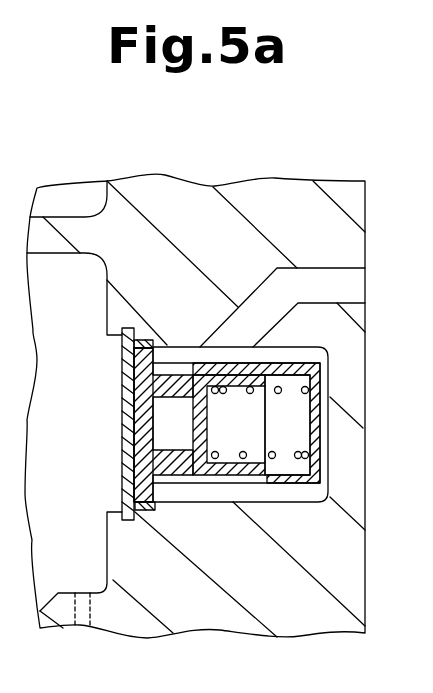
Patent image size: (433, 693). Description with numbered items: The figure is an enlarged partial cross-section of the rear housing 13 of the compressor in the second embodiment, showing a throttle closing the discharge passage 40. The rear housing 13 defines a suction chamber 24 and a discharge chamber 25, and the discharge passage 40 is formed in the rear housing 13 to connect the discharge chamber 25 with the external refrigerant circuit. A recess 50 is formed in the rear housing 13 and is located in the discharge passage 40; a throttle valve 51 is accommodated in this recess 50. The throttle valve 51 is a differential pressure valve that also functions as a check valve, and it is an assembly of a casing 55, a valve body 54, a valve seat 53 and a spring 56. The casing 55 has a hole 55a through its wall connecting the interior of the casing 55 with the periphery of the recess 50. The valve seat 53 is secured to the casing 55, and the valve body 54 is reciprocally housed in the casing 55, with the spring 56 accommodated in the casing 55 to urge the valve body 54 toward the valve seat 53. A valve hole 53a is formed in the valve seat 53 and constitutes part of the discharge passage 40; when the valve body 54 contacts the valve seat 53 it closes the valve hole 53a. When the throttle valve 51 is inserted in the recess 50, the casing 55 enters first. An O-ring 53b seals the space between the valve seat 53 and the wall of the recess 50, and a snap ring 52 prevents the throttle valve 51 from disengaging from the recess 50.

The rear housing 13 is at (292, 193).
The suction chamber 24 is at (62, 195).
The discharge passage 40 is at (337, 270).
The discharge chamber 25 is at (55, 405).
The recess 50 is at (216, 433).
The throttle valve 51 is at (210, 486).
The snap ring 52 is at (123, 500).
The valve seat 53 is at (138, 470).
The valve hole 53a is at (167, 450).
The O-ring 53b is at (143, 340).
The valve body 54 is at (195, 375).
The casing 55 is at (322, 371).
The hole 55a is at (258, 365).
The spring 56 is at (284, 462).